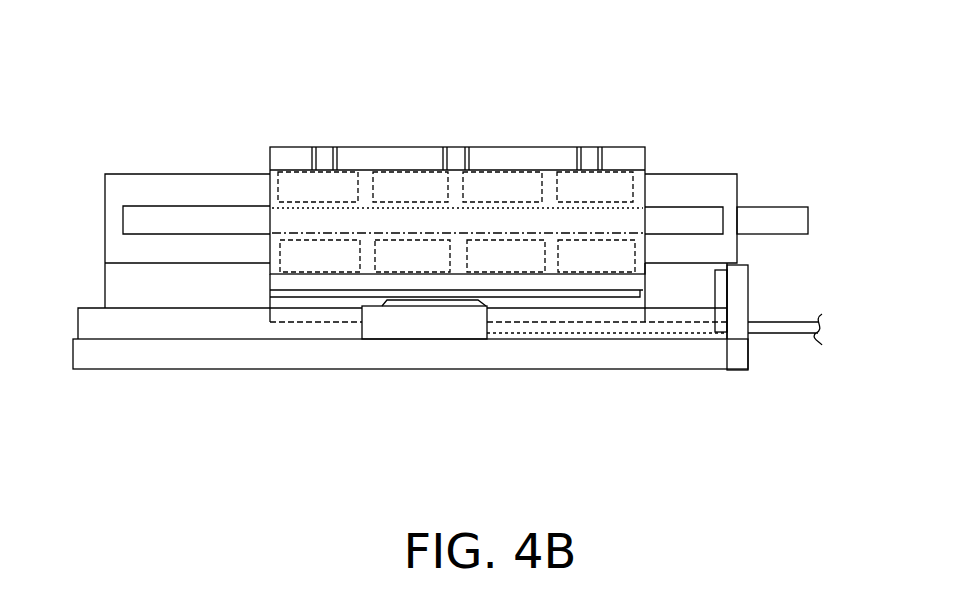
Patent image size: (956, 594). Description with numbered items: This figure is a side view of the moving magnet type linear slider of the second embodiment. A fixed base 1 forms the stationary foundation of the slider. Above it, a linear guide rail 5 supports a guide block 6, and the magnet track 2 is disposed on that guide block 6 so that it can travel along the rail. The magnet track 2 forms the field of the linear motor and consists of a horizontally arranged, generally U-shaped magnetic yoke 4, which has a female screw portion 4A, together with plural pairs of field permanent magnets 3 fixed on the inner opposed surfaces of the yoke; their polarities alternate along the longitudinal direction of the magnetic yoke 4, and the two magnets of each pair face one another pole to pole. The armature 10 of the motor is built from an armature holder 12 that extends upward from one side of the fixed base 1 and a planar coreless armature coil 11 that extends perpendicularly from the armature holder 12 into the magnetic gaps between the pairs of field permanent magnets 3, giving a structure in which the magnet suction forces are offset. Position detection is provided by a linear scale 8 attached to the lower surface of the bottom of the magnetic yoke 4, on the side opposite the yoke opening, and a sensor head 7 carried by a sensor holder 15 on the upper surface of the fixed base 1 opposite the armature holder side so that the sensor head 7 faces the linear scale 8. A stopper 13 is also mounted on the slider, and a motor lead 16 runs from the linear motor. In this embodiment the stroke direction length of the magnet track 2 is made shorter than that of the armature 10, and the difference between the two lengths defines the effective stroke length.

The fixed base 1 is at (690, 353).
The magnet track 2 is at (340, 85).
The field permanent magnet 3 is at (512, 180).
The magnetic yoke 4 is at (357, 158).
The female screw portion 4A is at (583, 150).
The linear guide rail 5 is at (170, 327).
The guide block 6 is at (298, 300).
The sensor head 7 is at (428, 307).
The linear scale 8 is at (352, 290).
The armature 10 is at (112, 125).
The armature coil 11 is at (207, 213).
The armature holder 12 is at (132, 200).
The stopper 13 is at (740, 327).
The sensor holder 15 is at (470, 328).
The motor lead 16 is at (778, 218).